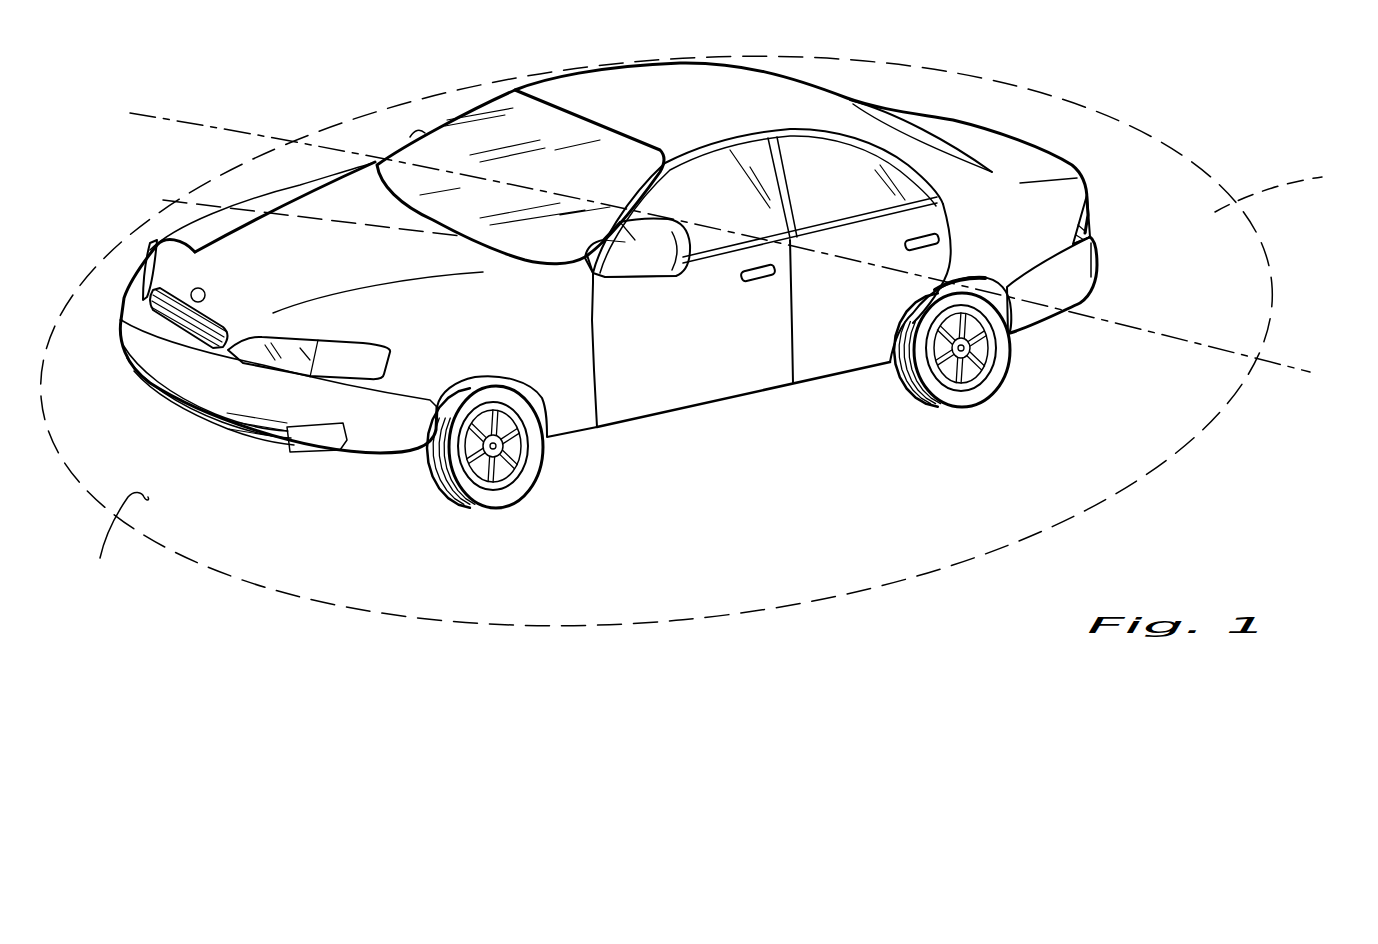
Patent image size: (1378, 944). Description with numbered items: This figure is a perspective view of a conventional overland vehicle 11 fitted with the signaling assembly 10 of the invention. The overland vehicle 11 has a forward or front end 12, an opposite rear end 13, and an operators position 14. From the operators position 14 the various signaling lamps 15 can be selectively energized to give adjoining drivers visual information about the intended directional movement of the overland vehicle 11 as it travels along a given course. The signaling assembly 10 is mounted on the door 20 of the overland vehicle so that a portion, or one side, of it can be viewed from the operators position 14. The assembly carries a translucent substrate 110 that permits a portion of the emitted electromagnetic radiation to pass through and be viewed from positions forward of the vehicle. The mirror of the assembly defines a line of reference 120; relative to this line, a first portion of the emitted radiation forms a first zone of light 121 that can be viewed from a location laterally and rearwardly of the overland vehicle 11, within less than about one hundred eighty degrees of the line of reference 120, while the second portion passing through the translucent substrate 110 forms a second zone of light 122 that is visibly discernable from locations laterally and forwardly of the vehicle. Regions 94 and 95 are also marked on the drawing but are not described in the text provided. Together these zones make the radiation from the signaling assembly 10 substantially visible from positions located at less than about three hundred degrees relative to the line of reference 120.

The signaling assembly 10 is at (700, 228).
The overland vehicle 11 is at (670, 112).
The front end 12 is at (225, 305).
The rear end 13 is at (1020, 147).
The operators position 14 is at (458, 206).
The signaling lamps 15 is at (302, 446).
The door 20 is at (712, 365).
The rearward zone 94 is at (1232, 262).
The forward zone 95 is at (407, 567).
The translucent substrate 110 is at (665, 288).
The line of reference 120 is at (246, 127).
The first zone of light 121 is at (1292, 189).
The second zone of light 122 is at (112, 541).